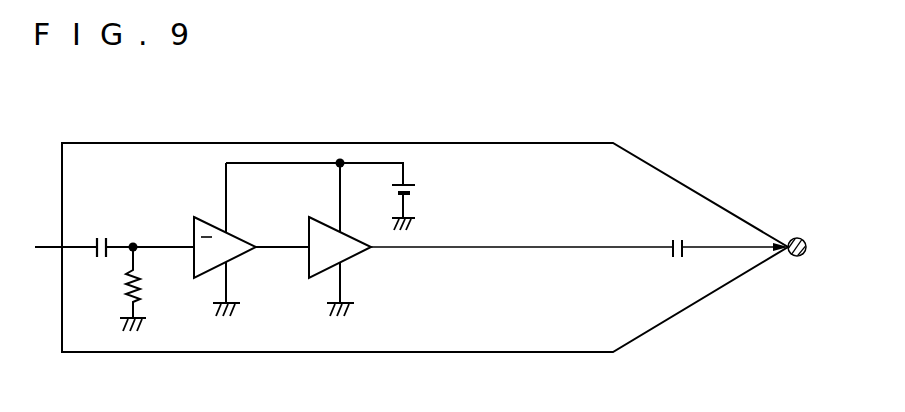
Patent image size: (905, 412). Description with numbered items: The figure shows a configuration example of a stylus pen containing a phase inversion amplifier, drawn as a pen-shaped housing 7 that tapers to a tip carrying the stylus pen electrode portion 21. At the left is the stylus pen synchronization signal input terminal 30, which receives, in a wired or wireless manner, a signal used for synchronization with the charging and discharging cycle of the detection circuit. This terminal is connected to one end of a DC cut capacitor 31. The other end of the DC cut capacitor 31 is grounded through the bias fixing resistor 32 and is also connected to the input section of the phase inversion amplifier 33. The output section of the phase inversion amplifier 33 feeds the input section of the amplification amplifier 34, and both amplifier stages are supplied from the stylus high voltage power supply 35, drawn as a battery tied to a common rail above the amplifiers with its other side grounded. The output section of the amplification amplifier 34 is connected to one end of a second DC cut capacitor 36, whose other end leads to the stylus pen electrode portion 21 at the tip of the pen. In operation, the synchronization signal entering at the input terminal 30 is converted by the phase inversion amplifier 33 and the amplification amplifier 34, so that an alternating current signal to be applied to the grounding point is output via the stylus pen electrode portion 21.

The catheter / probe housing 7 is at (520, 142).
The stylus pen electrode portion 21 is at (797, 237).
The stylus pen synchronization signal input terminal 30 is at (47, 246).
The DC cut capacitor 31 is at (99, 236).
The bias fixing resistor 32 is at (142, 290).
The phase inversion amplifier 33 is at (239, 232).
The amplification amplifier 34 is at (354, 232).
The stylus high voltage power supply 35 is at (418, 188).
The DC cut capacitor 36 is at (676, 237).